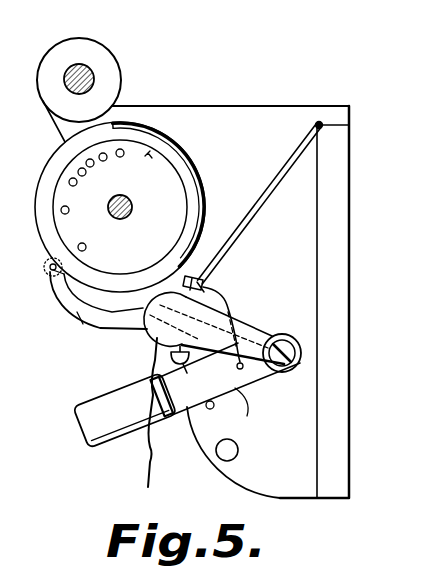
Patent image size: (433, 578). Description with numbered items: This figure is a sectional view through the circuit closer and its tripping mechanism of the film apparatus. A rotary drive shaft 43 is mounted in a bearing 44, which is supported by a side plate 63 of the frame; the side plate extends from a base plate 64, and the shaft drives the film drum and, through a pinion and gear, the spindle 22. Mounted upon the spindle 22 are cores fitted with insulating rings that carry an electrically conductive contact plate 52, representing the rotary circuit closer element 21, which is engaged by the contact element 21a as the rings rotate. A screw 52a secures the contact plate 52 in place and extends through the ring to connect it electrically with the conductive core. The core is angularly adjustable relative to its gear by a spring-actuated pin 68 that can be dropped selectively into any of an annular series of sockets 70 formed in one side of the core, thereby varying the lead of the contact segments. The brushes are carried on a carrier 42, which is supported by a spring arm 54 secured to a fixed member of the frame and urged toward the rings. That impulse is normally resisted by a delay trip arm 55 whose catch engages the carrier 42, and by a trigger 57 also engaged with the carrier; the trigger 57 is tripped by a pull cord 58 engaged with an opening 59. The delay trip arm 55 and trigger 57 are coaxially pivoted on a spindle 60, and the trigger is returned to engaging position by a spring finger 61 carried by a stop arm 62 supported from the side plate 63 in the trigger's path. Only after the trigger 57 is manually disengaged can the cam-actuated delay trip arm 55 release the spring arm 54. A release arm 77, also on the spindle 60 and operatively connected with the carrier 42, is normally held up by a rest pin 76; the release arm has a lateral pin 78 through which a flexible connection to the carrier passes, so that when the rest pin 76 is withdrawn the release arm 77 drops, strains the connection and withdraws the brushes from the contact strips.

The bearing 44 is at (97, 53).
The rotary drive shaft 43 is at (94, 78).
The rotary element of the circuit closer 21 is at (193, 188).
The contact plate 52 is at (197, 162).
The screw 52a is at (149, 153).
The sockets 70 is at (103, 161).
The spindle 22 is at (120, 219).
The spring arm 54 is at (251, 226).
The pin 68 is at (48, 272).
The delay trip arm 55 is at (88, 322).
The carrier 42 is at (207, 284).
The contact element 21a is at (218, 273).
The spring finger 61 is at (230, 320).
The spindle 60 is at (290, 370).
The lateral pin 78 is at (245, 372).
The trigger 57 is at (147, 333).
The opening 59 is at (160, 338).
The stop arm 62 is at (184, 368).
The pull cord 58 is at (156, 467).
The rest pin 76 is at (214, 407).
The release arm 77 is at (249, 410).
The side plate 63 is at (243, 473).
The base plate 64 is at (349, 438).